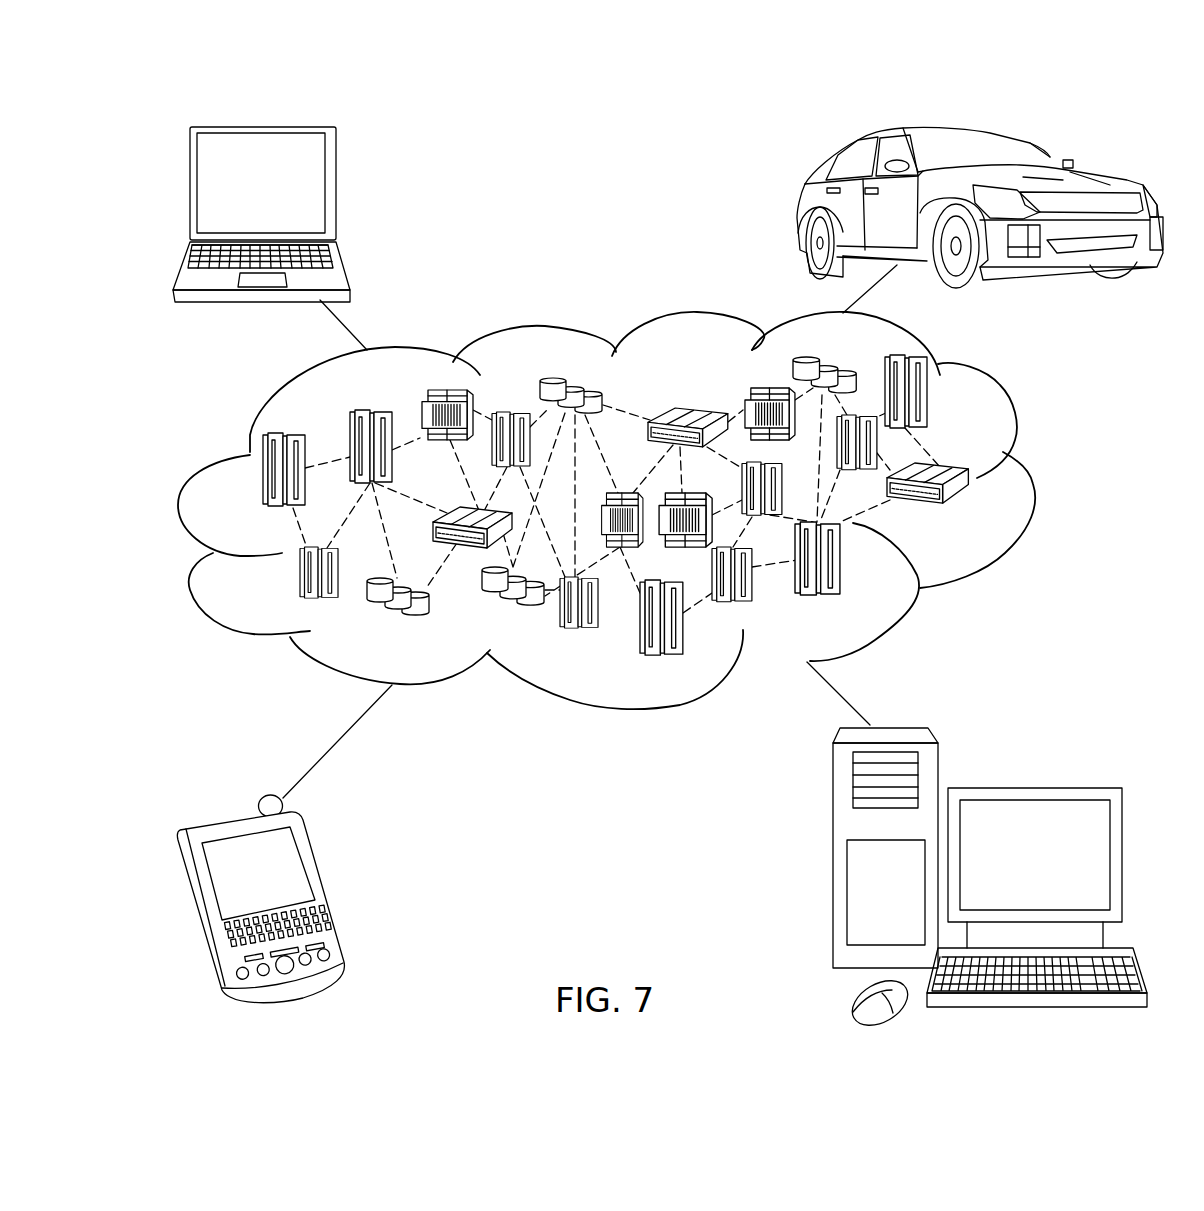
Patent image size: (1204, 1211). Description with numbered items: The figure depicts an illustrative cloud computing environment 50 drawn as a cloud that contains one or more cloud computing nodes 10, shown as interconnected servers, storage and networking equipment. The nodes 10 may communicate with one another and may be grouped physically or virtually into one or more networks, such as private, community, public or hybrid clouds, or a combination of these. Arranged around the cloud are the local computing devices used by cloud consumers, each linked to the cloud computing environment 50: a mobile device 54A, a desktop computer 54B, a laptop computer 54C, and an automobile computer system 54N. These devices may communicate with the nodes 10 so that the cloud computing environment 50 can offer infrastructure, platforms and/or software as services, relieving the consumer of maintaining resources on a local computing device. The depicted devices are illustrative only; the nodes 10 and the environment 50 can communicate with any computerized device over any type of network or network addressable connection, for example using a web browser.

The cloud computing environment 50 is at (1032, 482).
The cloud computing nodes 10 is at (968, 513).
The mobile device 54A is at (325, 887).
The desktop computer 54B is at (1030, 788).
The laptop computer 54C is at (337, 192).
The automobile computer system 54N is at (800, 208).